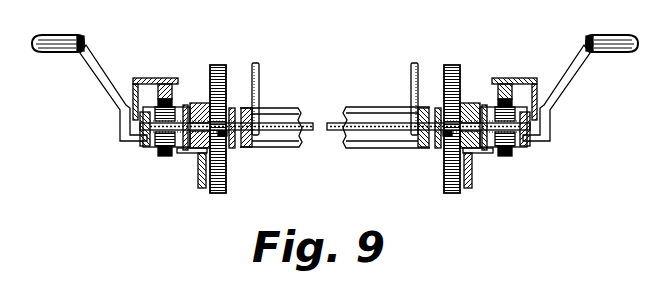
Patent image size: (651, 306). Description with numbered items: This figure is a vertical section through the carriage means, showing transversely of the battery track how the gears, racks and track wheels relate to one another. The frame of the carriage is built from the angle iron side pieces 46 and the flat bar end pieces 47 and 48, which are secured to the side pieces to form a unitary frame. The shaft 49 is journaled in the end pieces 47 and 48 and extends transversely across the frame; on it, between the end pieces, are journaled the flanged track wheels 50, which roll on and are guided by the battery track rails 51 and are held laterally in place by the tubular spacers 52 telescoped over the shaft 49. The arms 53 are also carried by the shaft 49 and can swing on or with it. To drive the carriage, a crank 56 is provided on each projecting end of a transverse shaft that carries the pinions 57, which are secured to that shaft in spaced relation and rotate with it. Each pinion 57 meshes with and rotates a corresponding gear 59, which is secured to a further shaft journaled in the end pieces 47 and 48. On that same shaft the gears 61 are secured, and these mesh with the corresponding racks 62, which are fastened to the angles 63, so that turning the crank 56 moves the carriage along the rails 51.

The angle iron side pieces 46 is at (280, 116).
The flat bar end piece 47 is at (146, 146).
The flat bar end piece 48 is at (252, 143).
The shaft 49 is at (375, 116).
The flanged track wheels 50 is at (197, 102).
The battery track rails 51 is at (198, 172).
The tubular spacers 52 is at (185, 105).
The arms 53 is at (259, 65).
The crank 56 is at (101, 83).
The pinions 57 is at (225, 137).
The gears 59 is at (217, 65).
The gears 61 is at (161, 157).
The racks 62 is at (158, 90).
The angles 63 is at (134, 79).